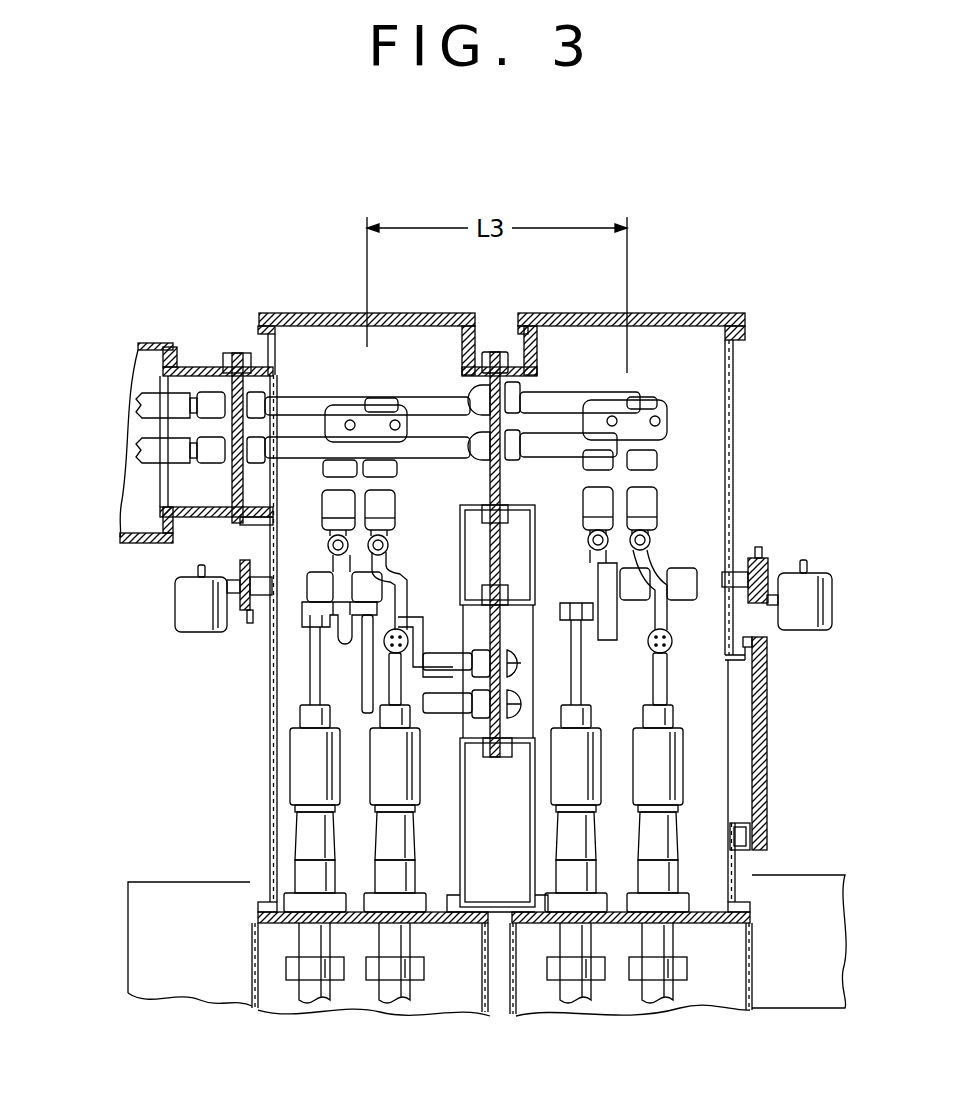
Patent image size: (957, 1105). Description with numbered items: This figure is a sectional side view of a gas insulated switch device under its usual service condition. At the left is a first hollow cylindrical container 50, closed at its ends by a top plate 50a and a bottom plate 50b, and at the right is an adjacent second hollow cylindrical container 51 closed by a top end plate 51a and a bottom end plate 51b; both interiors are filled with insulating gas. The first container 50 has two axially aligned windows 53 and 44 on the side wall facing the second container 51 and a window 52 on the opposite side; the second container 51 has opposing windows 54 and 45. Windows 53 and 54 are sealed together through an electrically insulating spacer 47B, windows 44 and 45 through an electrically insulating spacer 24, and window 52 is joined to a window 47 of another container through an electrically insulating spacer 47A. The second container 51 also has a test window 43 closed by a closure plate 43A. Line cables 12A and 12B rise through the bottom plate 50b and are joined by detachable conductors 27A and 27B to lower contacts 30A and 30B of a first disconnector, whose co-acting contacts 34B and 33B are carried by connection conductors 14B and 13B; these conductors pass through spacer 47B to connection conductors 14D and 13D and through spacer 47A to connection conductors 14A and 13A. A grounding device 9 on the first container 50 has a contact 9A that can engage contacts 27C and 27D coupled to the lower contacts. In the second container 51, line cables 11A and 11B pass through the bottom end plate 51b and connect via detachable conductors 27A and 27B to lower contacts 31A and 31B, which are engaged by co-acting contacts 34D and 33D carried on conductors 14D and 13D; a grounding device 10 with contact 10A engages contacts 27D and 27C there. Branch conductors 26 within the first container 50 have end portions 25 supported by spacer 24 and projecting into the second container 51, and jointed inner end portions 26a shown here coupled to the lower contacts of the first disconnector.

The grounding device 9 is at (182, 599).
The contact 9A is at (255, 605).
The grounding device 10 is at (780, 565).
The contact 10A is at (718, 540).
The line cable 11A is at (560, 875).
The line cable 11B is at (688, 880).
The line cable 12A is at (305, 870).
The line cable 12B is at (420, 878).
The connection conductor 13A is at (140, 458).
The connection conductor 13B is at (305, 440).
The connection conductor 13D is at (660, 440).
The connection conductor 14A is at (140, 407).
The connection conductor 14B is at (298, 397).
The connection conductor 14D is at (567, 395).
The electrically insulating spacer 24 is at (497, 757).
The end portions 25 is at (530, 690).
The branch conductors 26 is at (445, 650).
The inner end portions 26a is at (416, 615).
The detachable conductor 27A is at (365, 650).
The detachable conductor 27B is at (366, 712).
The contact 27C is at (307, 598).
The contact 27D is at (368, 605).
The lower contact 30A is at (272, 533).
The lower contact 30B is at (385, 505).
The lower contact 31A is at (587, 510).
The lower contact 31B is at (648, 484).
The co-acting contact 33B is at (395, 468).
The co-acting contact 33D is at (653, 458).
The co-acting contact 34B is at (327, 465).
The co-acting contact 34D is at (585, 468).
The test window 43 is at (755, 793).
The closure plate 43A is at (767, 738).
The window 44 is at (468, 730).
The window 45 is at (505, 752).
The window 47 is at (195, 370).
The electrically insulating spacer 47A is at (237, 355).
The electrically insulating spacer 47B is at (494, 352).
The first hollow cylindrical container 50 is at (270, 845).
The top plate 50a is at (398, 313).
The bottom plate 50b is at (288, 925).
The second hollow cylindrical container 51 is at (766, 850).
The top end plate 51a is at (718, 313).
The bottom end plate 51b is at (710, 933).
The window 52 is at (277, 372).
The window 53 is at (462, 385).
The window 54 is at (537, 375).